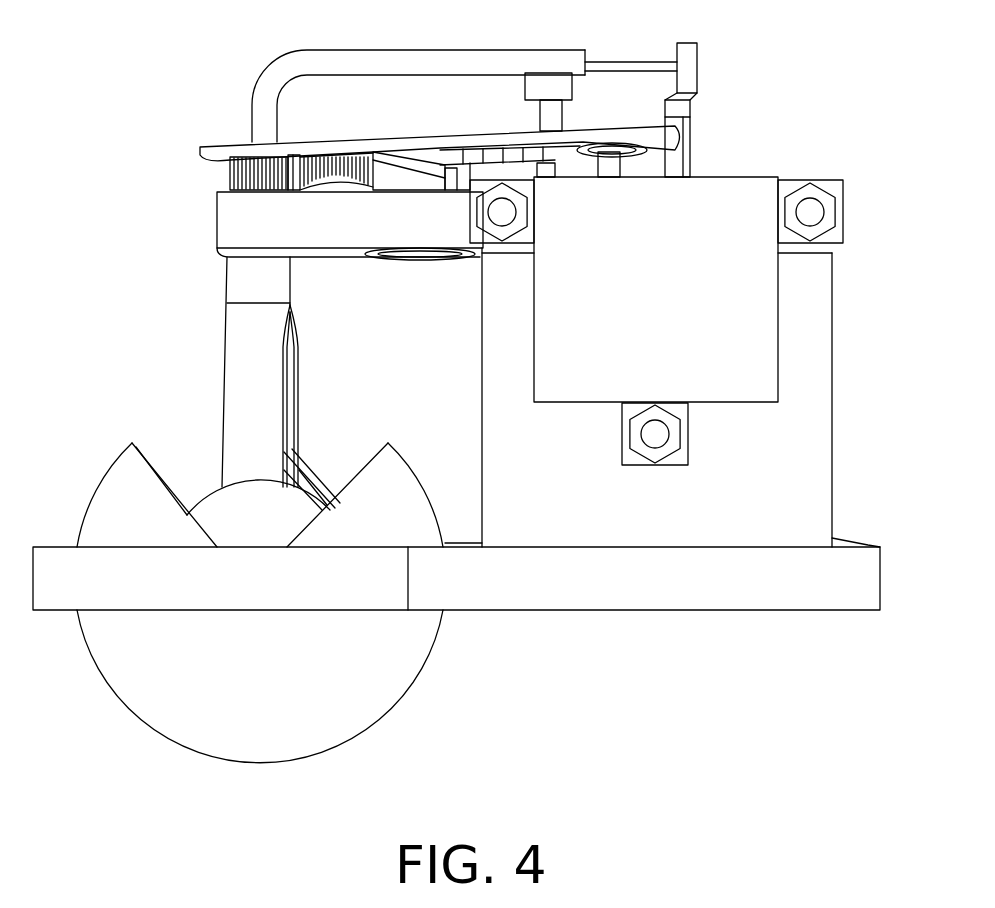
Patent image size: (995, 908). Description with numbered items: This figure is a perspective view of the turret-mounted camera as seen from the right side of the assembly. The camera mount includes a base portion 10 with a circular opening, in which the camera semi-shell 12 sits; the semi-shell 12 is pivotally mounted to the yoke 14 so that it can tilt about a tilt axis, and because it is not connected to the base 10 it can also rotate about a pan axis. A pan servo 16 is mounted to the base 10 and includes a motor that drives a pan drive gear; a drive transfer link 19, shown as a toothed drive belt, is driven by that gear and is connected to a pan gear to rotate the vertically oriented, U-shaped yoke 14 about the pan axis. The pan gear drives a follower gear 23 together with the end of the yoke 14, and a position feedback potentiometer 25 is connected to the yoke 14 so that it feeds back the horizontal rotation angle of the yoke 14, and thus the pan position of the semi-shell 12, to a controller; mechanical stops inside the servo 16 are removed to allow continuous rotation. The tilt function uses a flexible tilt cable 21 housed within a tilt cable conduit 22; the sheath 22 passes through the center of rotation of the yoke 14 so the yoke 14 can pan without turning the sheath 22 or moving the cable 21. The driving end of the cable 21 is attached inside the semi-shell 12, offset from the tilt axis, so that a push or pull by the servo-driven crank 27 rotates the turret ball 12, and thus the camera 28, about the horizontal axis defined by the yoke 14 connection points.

The base portion 10 is at (676, 597).
The camera semi-shell 12 is at (330, 735).
The yoke 14 is at (236, 331).
The pan servo 16 is at (750, 350).
The drive transfer link 19 is at (231, 152).
The tilt cable 21 is at (627, 65).
The tilt cable conduit 22 is at (427, 63).
The follower gear 23 is at (232, 178).
The position feedback potentiometer 25 is at (415, 258).
The crank 27 is at (693, 107).
The camera 28 is at (112, 714).